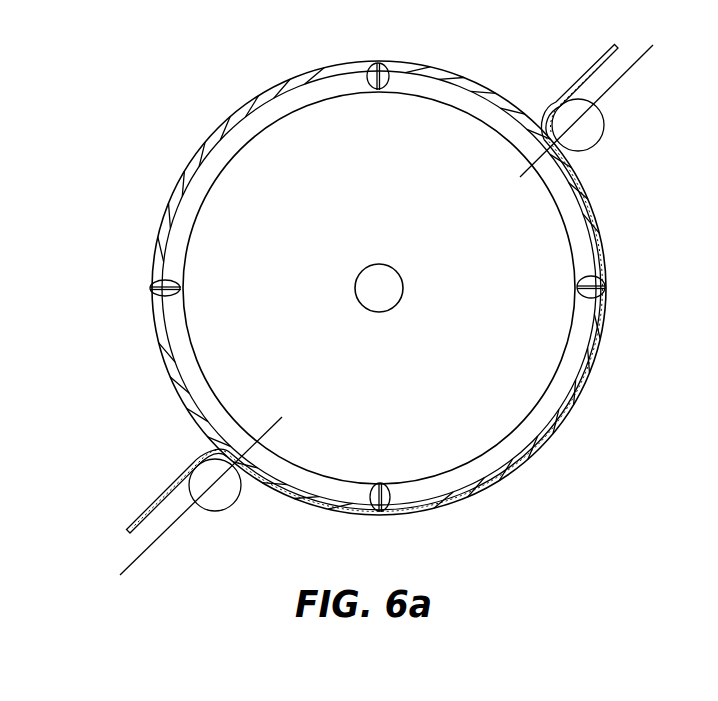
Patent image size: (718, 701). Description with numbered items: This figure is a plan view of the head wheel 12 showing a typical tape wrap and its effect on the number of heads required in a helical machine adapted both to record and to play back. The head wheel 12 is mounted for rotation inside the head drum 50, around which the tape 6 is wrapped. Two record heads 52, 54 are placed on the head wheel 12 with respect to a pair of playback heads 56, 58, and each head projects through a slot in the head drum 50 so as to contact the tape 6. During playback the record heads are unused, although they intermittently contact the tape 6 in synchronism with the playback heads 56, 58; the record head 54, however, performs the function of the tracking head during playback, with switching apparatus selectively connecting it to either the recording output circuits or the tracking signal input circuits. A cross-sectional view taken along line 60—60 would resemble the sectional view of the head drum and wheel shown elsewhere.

The head drum 50 is at (268, 96).
The record head 52 is at (168, 283).
The record head 54 is at (580, 291).
The playback head 56 is at (376, 483).
The playback head 58 is at (383, 85).
The head wheel 12 is at (455, 356).
The tape 6 is at (592, 200).
The section line 60 is at (635, 47).